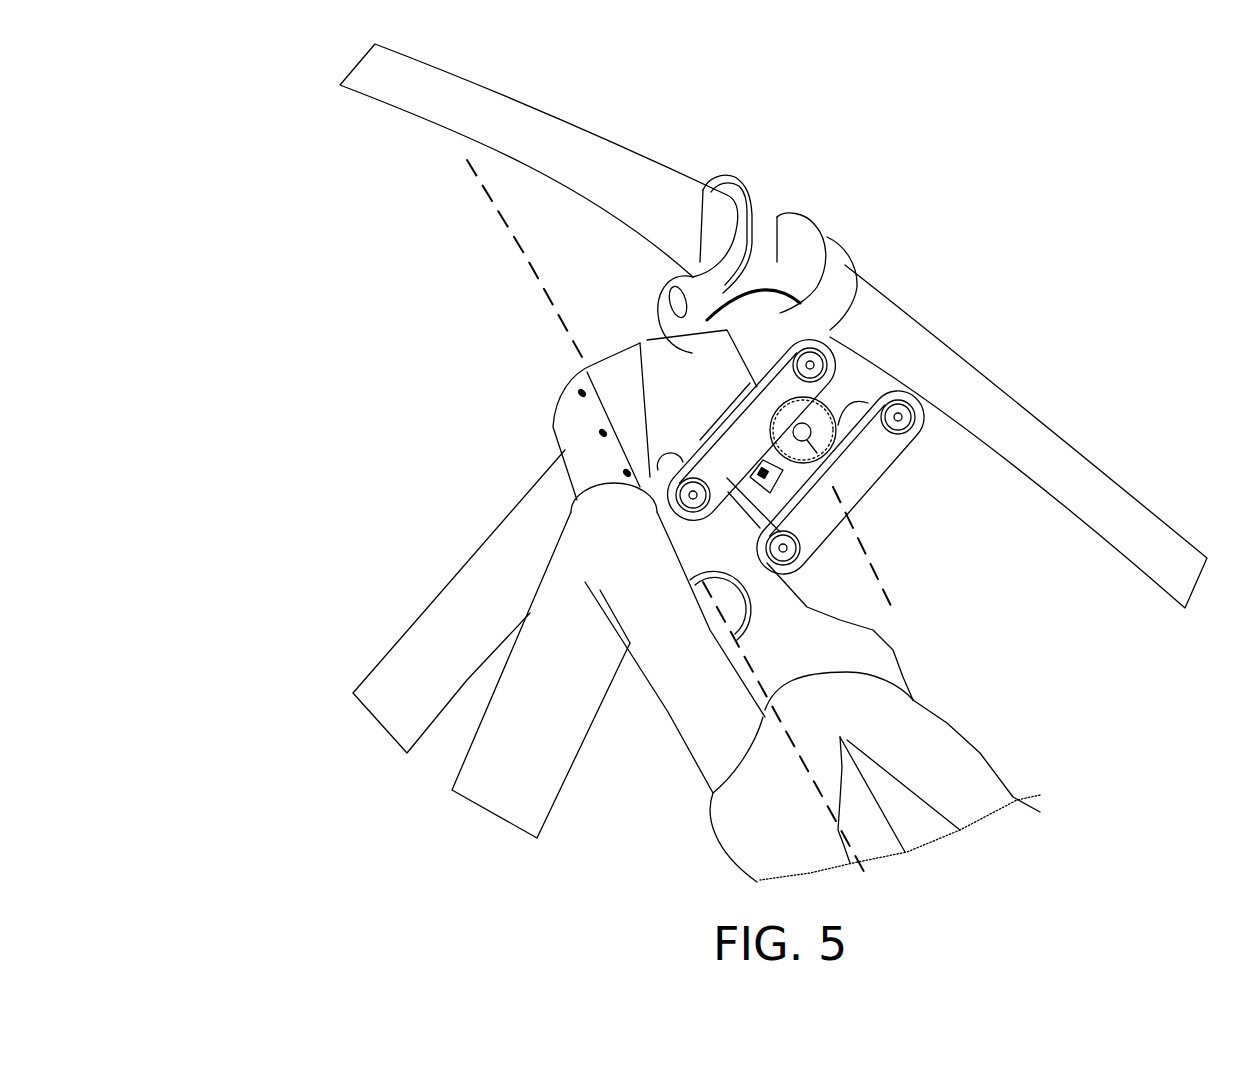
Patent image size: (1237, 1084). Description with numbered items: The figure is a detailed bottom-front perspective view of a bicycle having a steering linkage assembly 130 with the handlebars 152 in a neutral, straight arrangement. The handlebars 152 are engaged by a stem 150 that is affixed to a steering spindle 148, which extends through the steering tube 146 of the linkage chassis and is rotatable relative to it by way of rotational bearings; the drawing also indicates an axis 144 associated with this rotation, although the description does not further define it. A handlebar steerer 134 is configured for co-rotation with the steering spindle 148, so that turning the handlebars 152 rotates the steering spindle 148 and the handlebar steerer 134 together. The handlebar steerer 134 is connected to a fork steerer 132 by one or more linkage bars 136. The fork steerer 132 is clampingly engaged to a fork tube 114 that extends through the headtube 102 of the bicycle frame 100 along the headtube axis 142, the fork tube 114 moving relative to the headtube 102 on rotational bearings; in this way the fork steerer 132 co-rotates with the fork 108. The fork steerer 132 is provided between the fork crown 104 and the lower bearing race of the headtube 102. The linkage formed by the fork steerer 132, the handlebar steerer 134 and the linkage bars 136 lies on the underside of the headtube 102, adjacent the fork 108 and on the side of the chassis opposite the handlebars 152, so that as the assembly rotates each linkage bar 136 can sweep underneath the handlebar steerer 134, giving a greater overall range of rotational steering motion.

The bicycle frame 100 is at (417, 680).
The headtube 102 is at (578, 447).
The fork crown 104 is at (740, 540).
The fork 108 is at (973, 803).
The fork tube 114 is at (762, 545).
The steering linkage assembly 130 is at (937, 553).
The fork steerer 132 is at (728, 505).
The handlebar steerer 134 is at (850, 380).
The linkage bars 136 is at (750, 423).
The headtube axis 142 is at (860, 865).
The rotation axis 144 is at (857, 524).
The steering tube 146 is at (763, 317).
The steering spindle 148 is at (817, 410).
The stem 150 is at (663, 367).
The handlebars 152 is at (607, 173).